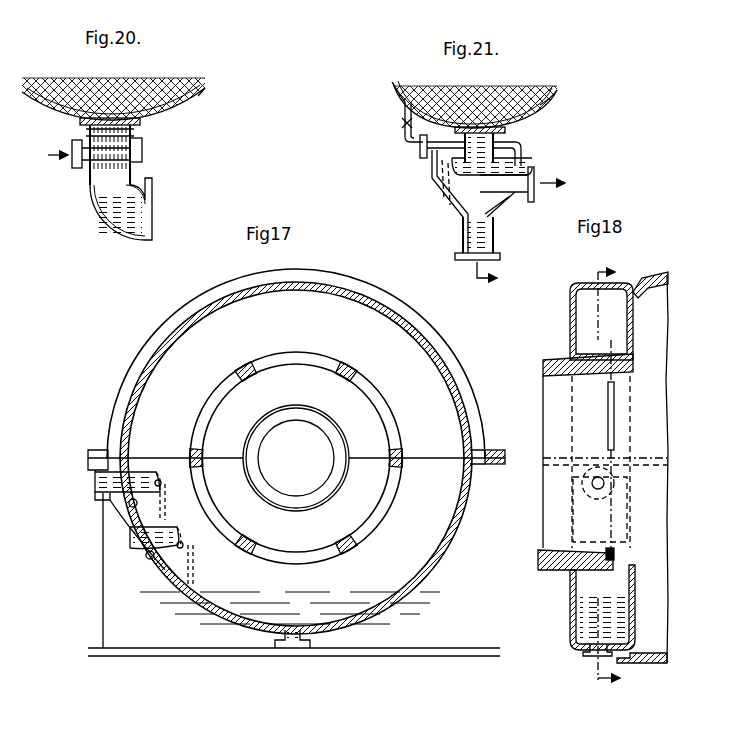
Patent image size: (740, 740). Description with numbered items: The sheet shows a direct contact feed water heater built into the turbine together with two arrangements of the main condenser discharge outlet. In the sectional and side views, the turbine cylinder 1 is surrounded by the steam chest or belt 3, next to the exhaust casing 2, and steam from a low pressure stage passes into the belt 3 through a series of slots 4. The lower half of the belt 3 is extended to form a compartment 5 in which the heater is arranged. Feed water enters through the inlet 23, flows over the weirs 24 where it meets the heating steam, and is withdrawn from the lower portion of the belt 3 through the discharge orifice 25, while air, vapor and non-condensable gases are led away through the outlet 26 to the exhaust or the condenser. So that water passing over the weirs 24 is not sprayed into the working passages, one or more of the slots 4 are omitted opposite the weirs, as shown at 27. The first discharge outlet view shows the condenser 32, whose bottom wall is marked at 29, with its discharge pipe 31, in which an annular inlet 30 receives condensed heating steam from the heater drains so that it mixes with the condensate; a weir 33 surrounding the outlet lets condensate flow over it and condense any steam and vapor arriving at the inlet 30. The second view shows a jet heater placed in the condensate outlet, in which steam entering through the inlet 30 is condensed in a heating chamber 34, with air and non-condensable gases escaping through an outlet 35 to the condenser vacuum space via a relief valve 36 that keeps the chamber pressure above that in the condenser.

In FIG. 17, the turbine cylinder 1 is at (296, 458).
In FIG. 18, the turbine cylinder 1 is at (566, 360).
In FIG. 17, the exhaust casing 2 is at (205, 300).
In FIG. 18, the exhaust casing 2 is at (668, 282).
In FIG. 17, the steam chest or belt 3 is at (355, 325).
In FIG. 18, the steam chest or belt 3 is at (590, 284).
In FIG. 17, the slots 4 is at (275, 357).
In FIG. 18, the slots 4 is at (614, 410).
In FIG. 17, the compartment 5 is at (432, 548).
In FIG. 18, the compartment 5 is at (616, 585).
In FIG. 17, the inlet 23 is at (100, 482).
In FIG. 18, the inlet 23 is at (588, 504).
In FIG. 17, the weirs 24 is at (162, 484).
In FIG. 17, the discharge orifice 25 is at (290, 650).
In FIG. 18, the discharge orifice 25 is at (590, 652).
In FIG. 17, the outlet 26 is at (131, 508).
In FIG. 17, the omitted slot 27 is at (210, 490).
In FIG. 18, the omitted slot 27 is at (612, 524).
In FIG. 20, the dish rim 29 is at (210, 106).
In FIG. 21, the dish rim 29 is at (540, 106).
In FIG. 20, the annular inlet 30 is at (76, 160).
In FIG. 21, the annular inlet 30 is at (534, 178).
In FIG. 20, the discharge pipe 31 is at (97, 205).
In FIG. 21, the discharge pipe 31 is at (494, 234).
In FIG. 20, the condenser 32 is at (114, 96).
In FIG. 21, the condenser 32 is at (475, 98).
In FIG. 20, the weir 33 is at (138, 118).
In FIG. 21, the weir 33 is at (480, 145).
In FIG. 21, the heating chamber 34 is at (462, 200).
In FIG. 21, the outlet 35 is at (425, 155).
In FIG. 21, the relief valve 36 is at (402, 123).